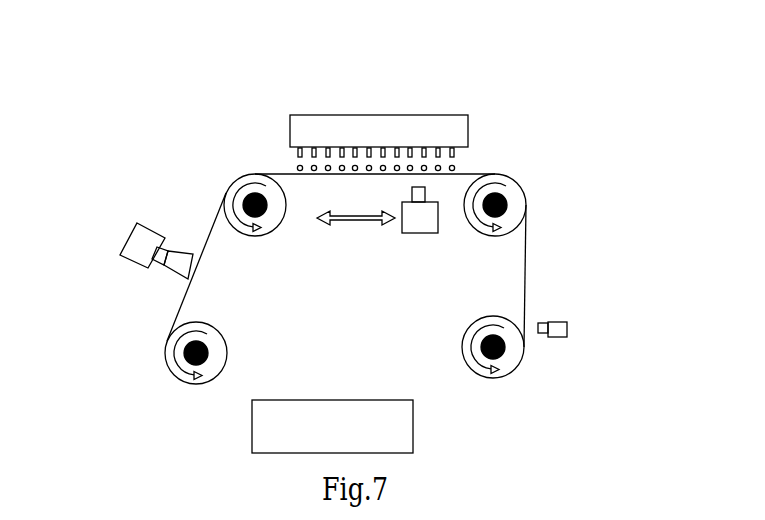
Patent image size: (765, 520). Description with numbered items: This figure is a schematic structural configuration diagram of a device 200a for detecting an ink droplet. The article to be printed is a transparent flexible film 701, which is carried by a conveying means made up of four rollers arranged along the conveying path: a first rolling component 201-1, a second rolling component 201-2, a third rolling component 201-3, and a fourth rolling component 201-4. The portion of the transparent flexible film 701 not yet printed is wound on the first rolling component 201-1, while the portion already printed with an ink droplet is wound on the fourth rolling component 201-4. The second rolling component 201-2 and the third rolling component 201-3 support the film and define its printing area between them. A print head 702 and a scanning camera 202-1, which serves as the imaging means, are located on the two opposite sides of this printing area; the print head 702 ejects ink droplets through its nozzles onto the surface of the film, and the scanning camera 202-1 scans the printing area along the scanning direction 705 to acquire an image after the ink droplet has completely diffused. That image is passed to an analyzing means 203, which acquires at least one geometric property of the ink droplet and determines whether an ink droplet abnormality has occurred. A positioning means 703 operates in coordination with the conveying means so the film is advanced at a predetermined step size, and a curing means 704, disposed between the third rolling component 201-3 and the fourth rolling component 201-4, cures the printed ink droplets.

The device for detecting an ink droplet 200a is at (149, 84).
The first rolling component 201-1 is at (505, 357).
The second rolling component 201-2 is at (510, 197).
The third rolling component 201-3 is at (258, 191).
The fourth rolling component 201-4 is at (193, 370).
The scanning camera 202-1 is at (418, 233).
The analyzing means 203 is at (413, 427).
The transparent flexible film 701 is at (525, 275).
The print head 702 is at (445, 130).
The positioning means 703 is at (556, 325).
The curing means 704 is at (146, 250).
The scanning direction 705 is at (357, 222).